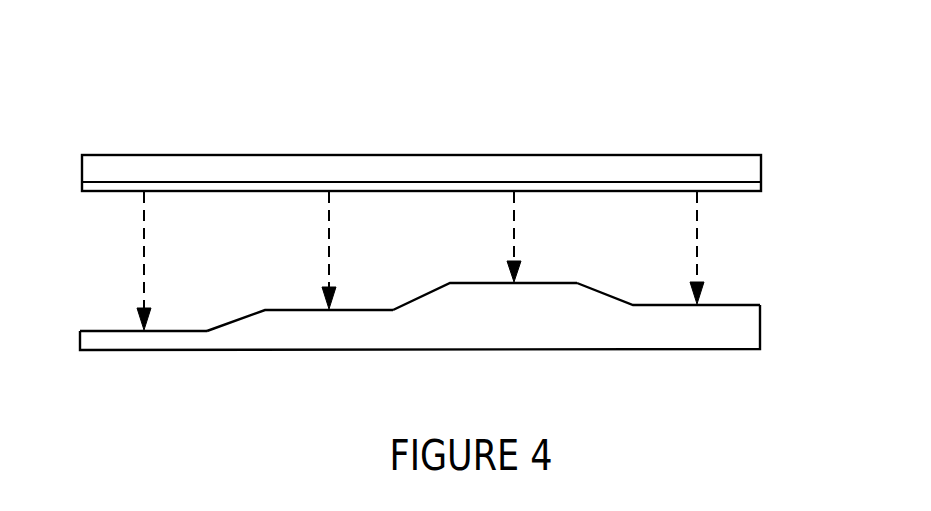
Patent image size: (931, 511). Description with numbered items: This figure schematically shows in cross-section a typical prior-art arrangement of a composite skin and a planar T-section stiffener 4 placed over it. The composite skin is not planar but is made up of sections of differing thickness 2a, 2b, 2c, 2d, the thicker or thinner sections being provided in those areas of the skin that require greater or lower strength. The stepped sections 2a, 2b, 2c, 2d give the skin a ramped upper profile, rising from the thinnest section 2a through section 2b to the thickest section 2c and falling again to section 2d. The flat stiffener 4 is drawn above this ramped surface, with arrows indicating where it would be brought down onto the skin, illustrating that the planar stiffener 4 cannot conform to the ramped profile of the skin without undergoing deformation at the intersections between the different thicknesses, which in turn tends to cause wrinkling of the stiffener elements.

The stiffener 4 is at (410, 162).
The section of differing thickness 2a is at (177, 330).
The section of differing thickness 2b is at (367, 308).
The section of differing thickness 2c is at (556, 282).
The section of differing thickness 2d is at (671, 304).